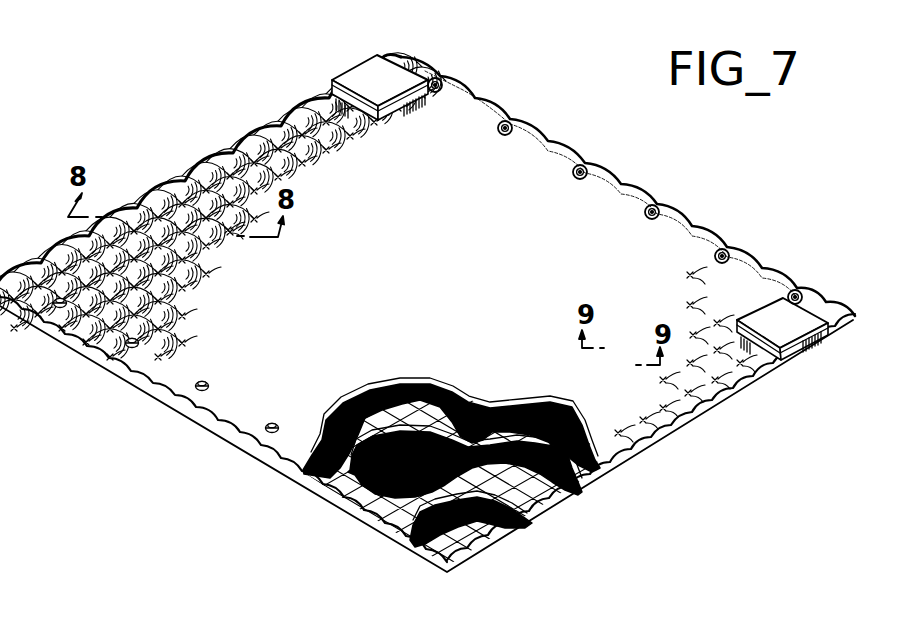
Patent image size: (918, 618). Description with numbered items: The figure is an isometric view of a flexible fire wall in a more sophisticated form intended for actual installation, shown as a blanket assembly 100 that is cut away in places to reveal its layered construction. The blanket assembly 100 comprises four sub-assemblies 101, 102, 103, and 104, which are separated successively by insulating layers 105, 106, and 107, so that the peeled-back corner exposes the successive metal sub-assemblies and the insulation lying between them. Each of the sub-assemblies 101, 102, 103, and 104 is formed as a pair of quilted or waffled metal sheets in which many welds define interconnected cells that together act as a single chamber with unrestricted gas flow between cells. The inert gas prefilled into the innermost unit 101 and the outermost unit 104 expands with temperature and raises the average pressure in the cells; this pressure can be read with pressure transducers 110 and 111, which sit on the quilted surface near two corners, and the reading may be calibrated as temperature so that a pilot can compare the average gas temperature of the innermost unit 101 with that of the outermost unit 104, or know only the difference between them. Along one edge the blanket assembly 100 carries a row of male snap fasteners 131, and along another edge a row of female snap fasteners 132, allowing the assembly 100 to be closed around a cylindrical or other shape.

The blanket assembly 100 is at (183, 124).
The sub-assembly 101 is at (440, 563).
The sub-assembly 102 is at (388, 520).
The sub-assembly 103 is at (337, 490).
The sub-assembly 104 is at (381, 329).
The insulating layer 105 is at (526, 517).
The insulating layer 106 is at (587, 486).
The insulating layer 107 is at (613, 467).
The pressure transducer 110 is at (358, 70).
The pressure transducer 111 is at (786, 303).
The male snap fasteners 131 is at (126, 346).
The female snap fasteners 132 is at (506, 120).